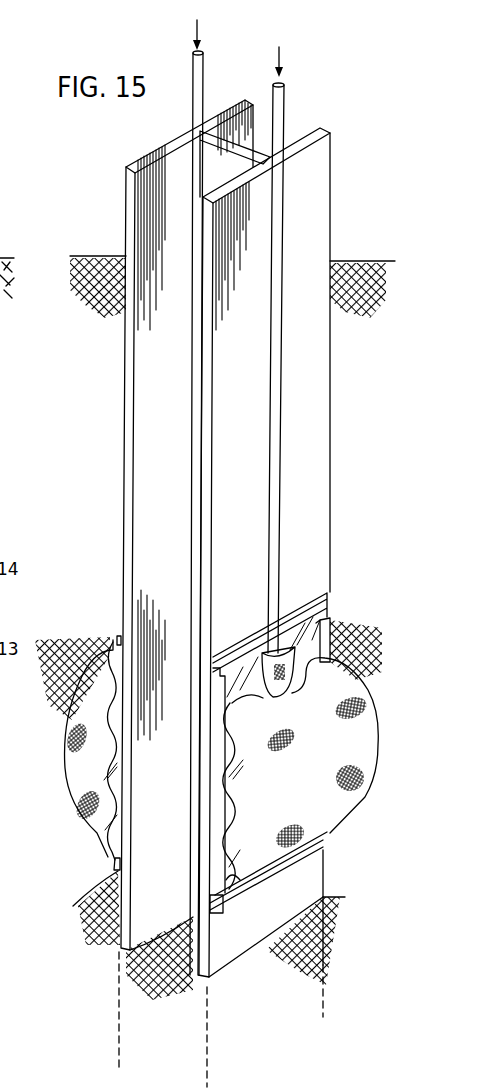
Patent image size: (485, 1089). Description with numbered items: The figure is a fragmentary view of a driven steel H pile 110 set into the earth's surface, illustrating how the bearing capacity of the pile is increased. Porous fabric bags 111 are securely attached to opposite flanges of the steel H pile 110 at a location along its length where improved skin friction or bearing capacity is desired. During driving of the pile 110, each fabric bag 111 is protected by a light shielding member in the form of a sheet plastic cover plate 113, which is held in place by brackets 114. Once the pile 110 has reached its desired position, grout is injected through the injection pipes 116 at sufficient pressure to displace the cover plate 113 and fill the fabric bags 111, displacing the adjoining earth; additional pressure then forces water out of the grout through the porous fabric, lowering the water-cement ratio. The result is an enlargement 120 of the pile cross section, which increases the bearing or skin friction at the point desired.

The steel H pile 110 is at (120, 425).
The porous fabric bag 111 is at (61, 781).
The cover plate 113 is at (108, 818).
The bracket 114 is at (118, 640).
The injection pipe 116 is at (195, 106).
The enlargement 120 is at (77, 722).